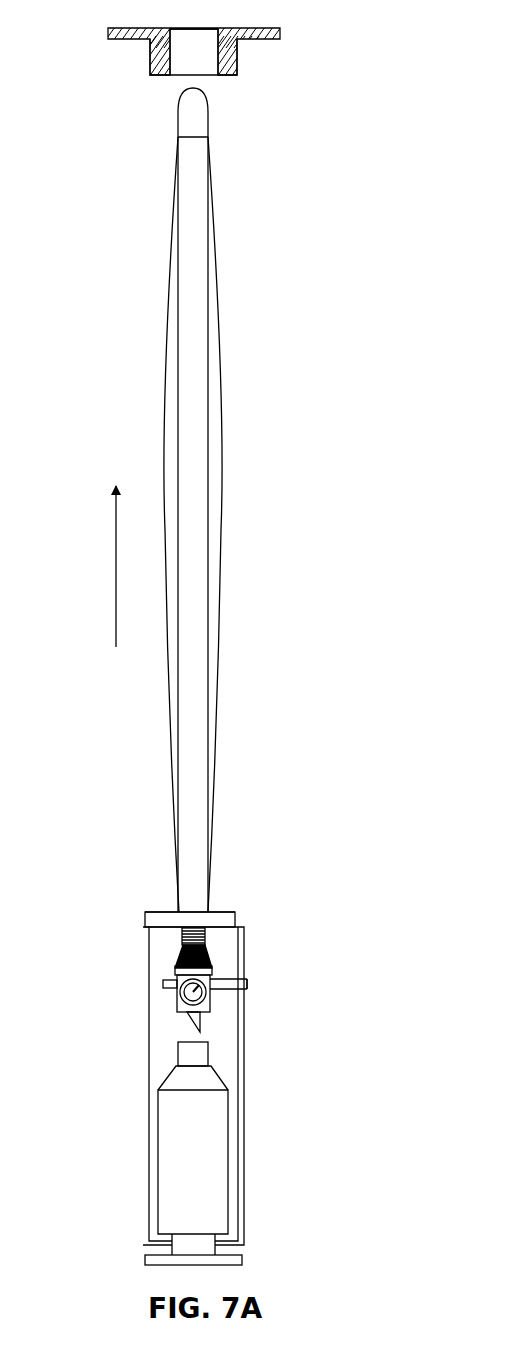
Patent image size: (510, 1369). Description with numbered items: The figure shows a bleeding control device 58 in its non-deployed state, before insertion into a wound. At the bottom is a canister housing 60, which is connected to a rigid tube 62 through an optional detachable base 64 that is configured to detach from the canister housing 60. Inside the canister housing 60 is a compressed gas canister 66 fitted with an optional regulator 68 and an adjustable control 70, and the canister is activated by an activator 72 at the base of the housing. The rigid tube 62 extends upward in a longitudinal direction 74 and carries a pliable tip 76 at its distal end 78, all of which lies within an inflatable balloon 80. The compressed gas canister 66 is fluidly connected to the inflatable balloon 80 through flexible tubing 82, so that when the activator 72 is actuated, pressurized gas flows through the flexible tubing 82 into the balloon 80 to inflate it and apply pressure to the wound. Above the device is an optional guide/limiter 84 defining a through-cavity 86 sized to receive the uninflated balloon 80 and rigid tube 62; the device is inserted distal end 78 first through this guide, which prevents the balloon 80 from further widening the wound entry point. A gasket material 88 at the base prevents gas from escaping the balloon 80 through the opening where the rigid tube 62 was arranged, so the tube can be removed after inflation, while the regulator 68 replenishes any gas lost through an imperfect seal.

The bleeding control device 58 is at (106, 376).
The canister housing 60 is at (244, 1063).
The rigid tube 62 is at (198, 660).
The detachable base 64 is at (219, 920).
The compressed gas canister 66 is at (220, 1133).
The regulator 68 is at (210, 974).
The adjustable control 70 is at (251, 983).
The activator 72 is at (242, 1260).
The longitudinal direction 74 is at (116, 575).
The pliable tip 76 is at (178, 126).
The distal end 78 is at (124, 69).
The inflatable balloon 80 is at (222, 532).
The flexible tubing 82 is at (182, 934).
The guide/limiter 84 is at (257, 28).
The through-cavity 86 is at (194, 68).
The gasket material 88 is at (158, 910).